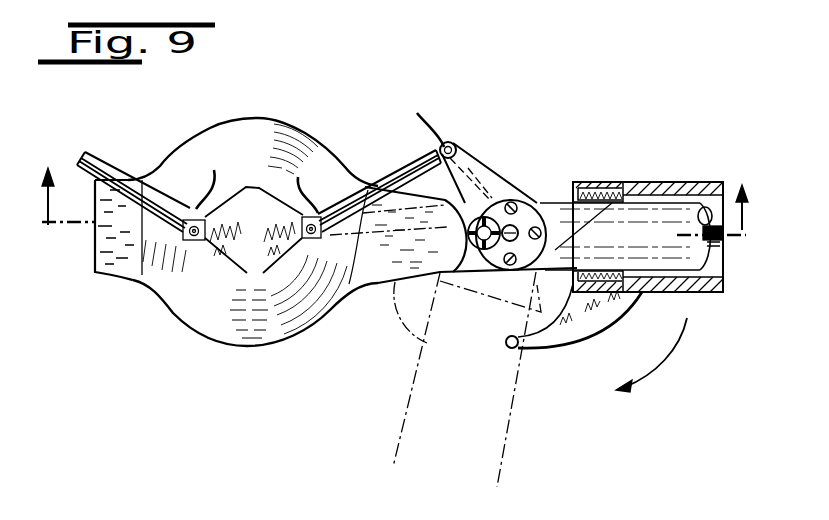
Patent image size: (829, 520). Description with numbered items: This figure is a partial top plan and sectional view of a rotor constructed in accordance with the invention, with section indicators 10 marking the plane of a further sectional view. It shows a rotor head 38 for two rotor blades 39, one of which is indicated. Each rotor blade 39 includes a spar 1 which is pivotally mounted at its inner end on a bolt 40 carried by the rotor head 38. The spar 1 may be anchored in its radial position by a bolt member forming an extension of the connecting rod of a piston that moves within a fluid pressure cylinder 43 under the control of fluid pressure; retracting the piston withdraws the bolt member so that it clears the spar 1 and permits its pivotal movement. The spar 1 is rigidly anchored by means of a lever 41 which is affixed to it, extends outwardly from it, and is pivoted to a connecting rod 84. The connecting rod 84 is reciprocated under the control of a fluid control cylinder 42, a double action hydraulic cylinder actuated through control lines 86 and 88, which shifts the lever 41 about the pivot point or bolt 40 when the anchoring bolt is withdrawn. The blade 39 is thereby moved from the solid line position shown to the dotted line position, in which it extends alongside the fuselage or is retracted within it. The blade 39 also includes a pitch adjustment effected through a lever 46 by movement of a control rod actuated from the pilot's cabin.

The section line 10- 10 is at (396, 189).
The rotor head 38 is at (243, 133).
The rotor blade 39 is at (637, 183).
The bolt 40 is at (515, 227).
The lever 41 is at (492, 188).
The fluid control cylinder 42 is at (393, 182).
The fluid pressure cylinder 43 is at (464, 255).
The lever 46 is at (537, 353).
The connecting rod 84 is at (467, 137).
The control line 86 is at (274, 164).
The control line 88 is at (435, 117).
The spar 1 is at (678, 245).